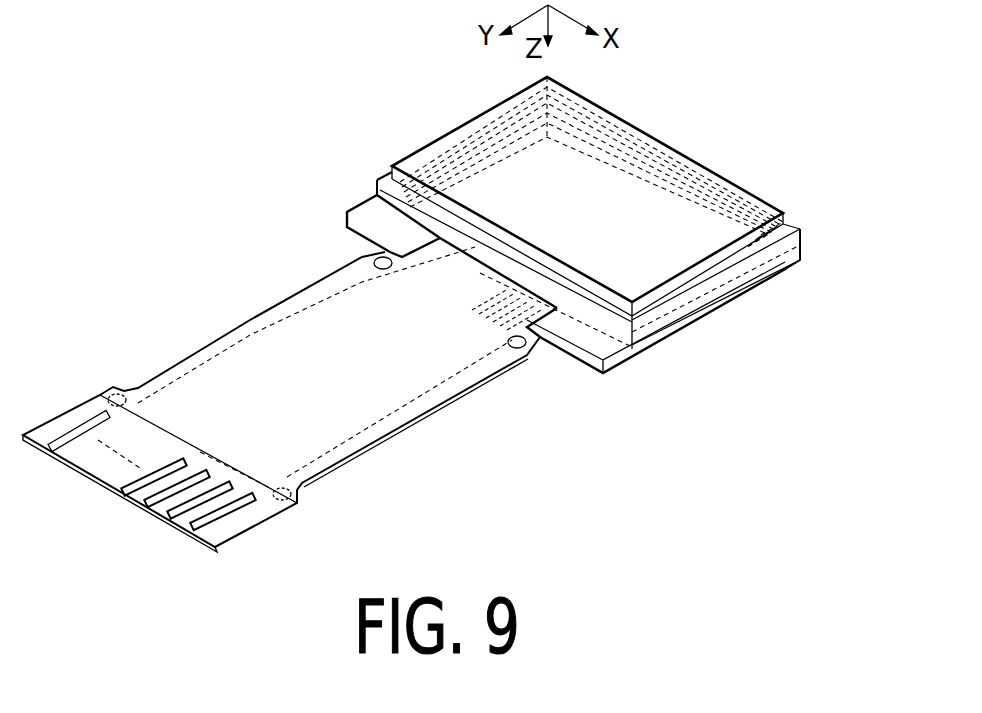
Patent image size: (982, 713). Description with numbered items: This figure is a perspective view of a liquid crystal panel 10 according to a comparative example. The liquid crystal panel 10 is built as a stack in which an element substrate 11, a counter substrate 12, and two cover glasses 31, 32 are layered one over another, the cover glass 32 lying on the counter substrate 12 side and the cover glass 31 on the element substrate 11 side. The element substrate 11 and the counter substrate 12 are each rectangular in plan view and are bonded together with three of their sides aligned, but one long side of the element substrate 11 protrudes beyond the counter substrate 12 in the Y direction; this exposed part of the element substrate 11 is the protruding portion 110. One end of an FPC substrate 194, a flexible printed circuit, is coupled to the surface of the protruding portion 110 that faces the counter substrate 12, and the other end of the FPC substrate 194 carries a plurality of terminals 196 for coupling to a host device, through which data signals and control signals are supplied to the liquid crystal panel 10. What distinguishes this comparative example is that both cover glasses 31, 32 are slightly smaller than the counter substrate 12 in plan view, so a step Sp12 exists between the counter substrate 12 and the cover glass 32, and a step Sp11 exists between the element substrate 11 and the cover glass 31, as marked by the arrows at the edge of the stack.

The liquid crystal panel 10 is at (432, 122).
The element substrate 11 is at (347, 214).
The counter substrate 12 is at (376, 181).
The cover glass 31 is at (745, 297).
The cover glass 32 is at (743, 188).
The protruding portion 110 is at (593, 340).
The FPC substrate 194 is at (237, 332).
The terminals 196 is at (190, 521).
The step Sp11 is at (801, 264).
The step Sp12 is at (840, 197).